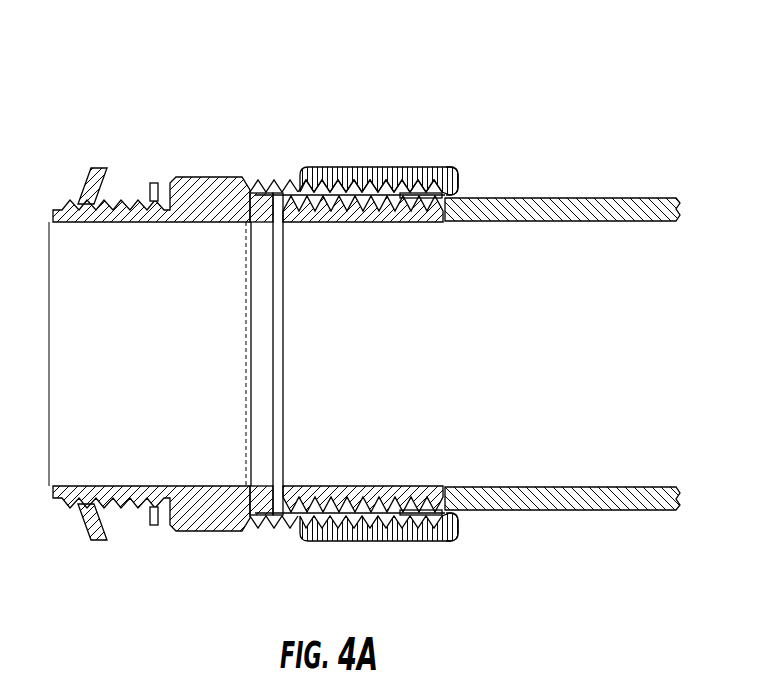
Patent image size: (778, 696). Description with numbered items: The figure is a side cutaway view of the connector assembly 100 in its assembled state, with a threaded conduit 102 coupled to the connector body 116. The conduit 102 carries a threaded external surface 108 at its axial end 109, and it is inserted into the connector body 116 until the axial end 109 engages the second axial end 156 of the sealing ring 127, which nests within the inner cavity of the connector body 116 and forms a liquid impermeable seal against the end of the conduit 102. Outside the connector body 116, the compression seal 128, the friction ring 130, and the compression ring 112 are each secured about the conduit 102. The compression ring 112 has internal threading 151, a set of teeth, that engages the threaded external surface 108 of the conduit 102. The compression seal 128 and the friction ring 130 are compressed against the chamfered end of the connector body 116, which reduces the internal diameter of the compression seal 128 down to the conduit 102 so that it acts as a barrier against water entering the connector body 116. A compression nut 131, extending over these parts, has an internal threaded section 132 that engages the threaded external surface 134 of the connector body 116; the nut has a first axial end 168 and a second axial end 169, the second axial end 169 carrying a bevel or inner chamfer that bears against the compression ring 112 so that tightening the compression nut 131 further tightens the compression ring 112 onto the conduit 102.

The connector assembly 100 is at (331, 90).
The conduit 102 is at (587, 248).
The threaded external surface 108 is at (318, 540).
The axial end 109 is at (285, 525).
The compression ring 112 is at (425, 540).
The connector body 116 is at (202, 164).
The sealing ring 127 is at (255, 528).
The compression seal 128 is at (352, 180).
The friction ring 130 is at (380, 190).
The compression nut 131 is at (415, 190).
The internal threaded section 132 is at (390, 545).
The threaded external surface 134 is at (250, 180).
The internal threading 151 is at (460, 525).
The second axial end 156 is at (285, 180).
The first axial end 168 is at (295, 178).
The second axial end 169 is at (463, 188).